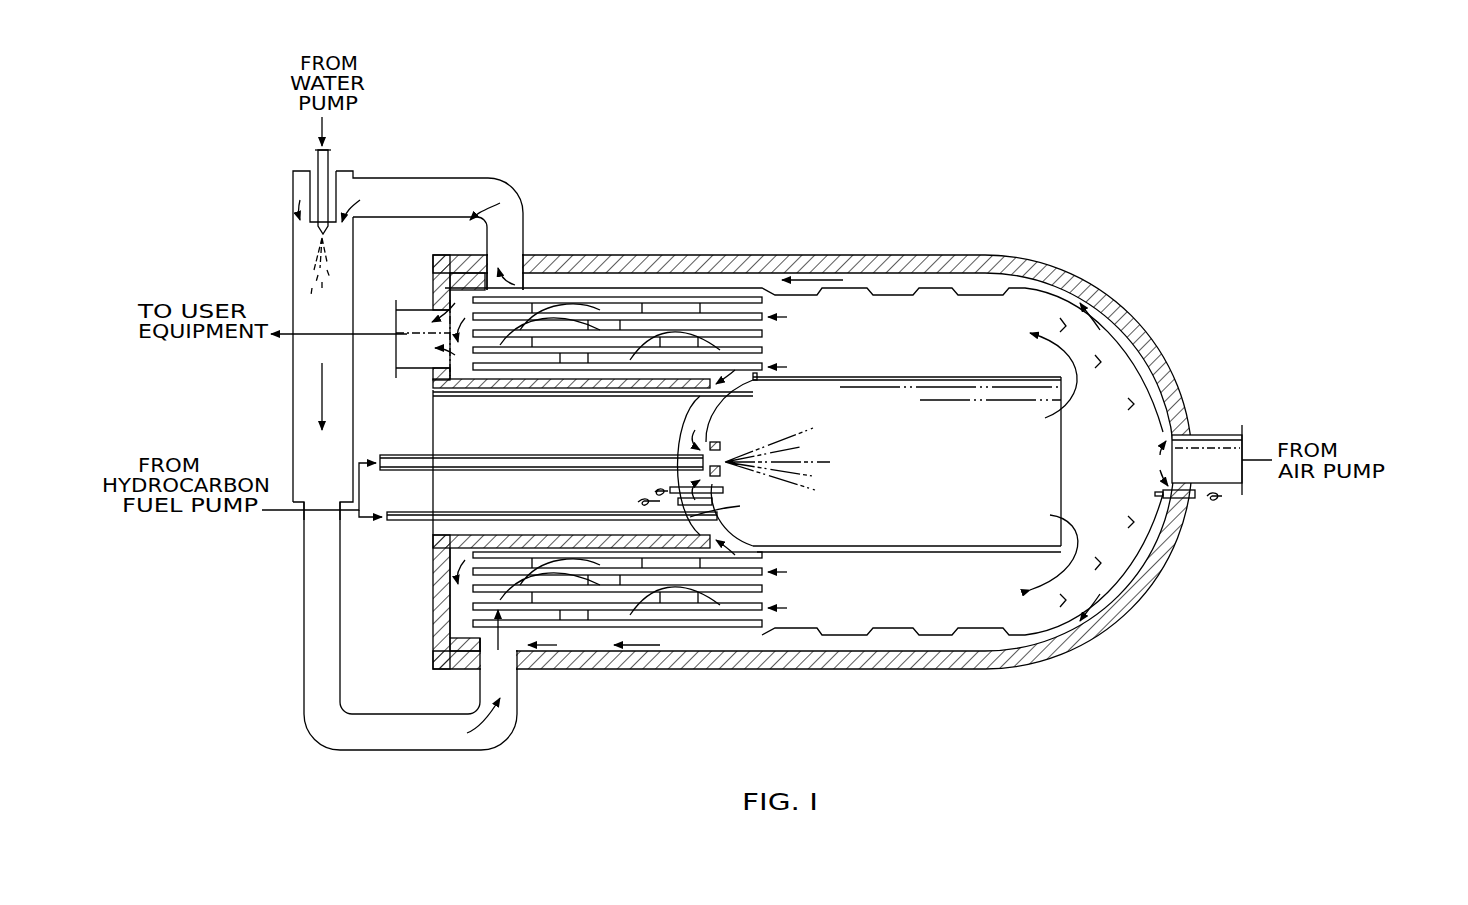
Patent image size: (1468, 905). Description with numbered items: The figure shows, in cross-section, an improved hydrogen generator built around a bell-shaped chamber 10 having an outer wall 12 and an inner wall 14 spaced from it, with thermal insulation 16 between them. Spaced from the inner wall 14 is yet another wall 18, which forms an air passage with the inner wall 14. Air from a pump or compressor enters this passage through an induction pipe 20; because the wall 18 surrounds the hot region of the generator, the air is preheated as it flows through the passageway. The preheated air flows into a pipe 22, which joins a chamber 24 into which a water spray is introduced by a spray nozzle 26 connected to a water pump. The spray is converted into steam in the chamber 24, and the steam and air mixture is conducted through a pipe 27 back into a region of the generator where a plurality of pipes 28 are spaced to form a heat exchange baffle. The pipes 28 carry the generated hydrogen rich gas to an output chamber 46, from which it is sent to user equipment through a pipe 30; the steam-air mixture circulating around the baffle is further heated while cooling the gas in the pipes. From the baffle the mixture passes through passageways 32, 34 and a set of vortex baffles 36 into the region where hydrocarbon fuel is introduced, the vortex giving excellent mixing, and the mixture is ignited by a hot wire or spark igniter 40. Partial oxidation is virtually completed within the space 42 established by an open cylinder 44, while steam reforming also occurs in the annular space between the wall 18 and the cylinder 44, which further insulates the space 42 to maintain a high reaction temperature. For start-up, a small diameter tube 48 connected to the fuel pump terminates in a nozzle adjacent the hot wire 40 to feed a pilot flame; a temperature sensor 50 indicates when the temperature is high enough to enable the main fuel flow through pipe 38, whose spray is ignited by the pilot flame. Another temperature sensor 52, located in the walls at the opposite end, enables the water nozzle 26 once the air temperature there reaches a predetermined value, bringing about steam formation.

The bell-shaped chamber 10 is at (1061, 172).
The outer wall 12 is at (945, 254).
The inner wall 14 is at (938, 273).
The thermal insulation 16 is at (878, 264).
The wall 18 is at (875, 296).
The induction pipe 20 is at (1207, 433).
The pipe 22 is at (447, 176).
The chamber 24 is at (292, 250).
The spray nozzle 26 is at (330, 162).
The pipe 27 is at (385, 714).
The pipes 28 is at (667, 300).
The pipe 30 is at (414, 296).
The passageway 32 is at (692, 402).
The passageway 34 is at (672, 473).
The vortex baffles 36 is at (727, 440).
The pipe 38 is at (457, 455).
The spark igniter 40 is at (725, 490).
The space 42 is at (926, 470).
The open cylinder 44 is at (963, 377).
The output chamber 46 is at (463, 372).
The small diameter tube 48 is at (503, 514).
The temperature sensor 50 is at (733, 508).
The temperature sensor 52 is at (1193, 500).